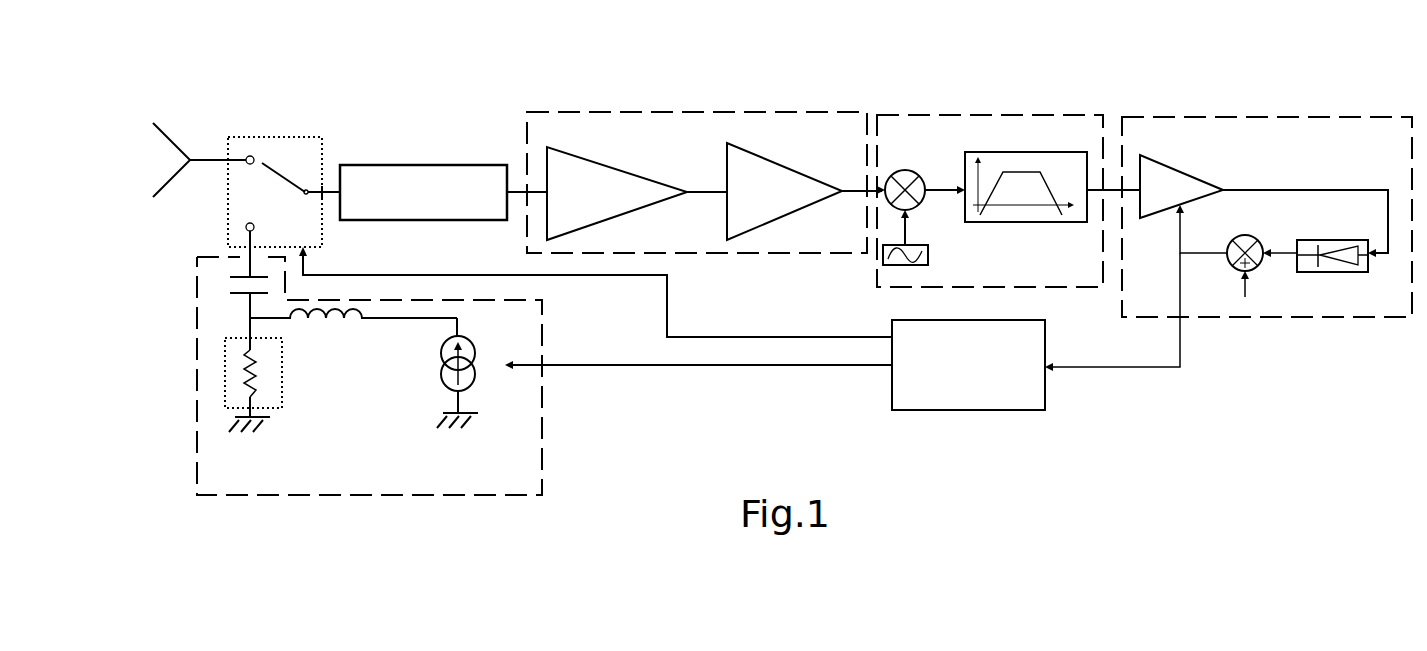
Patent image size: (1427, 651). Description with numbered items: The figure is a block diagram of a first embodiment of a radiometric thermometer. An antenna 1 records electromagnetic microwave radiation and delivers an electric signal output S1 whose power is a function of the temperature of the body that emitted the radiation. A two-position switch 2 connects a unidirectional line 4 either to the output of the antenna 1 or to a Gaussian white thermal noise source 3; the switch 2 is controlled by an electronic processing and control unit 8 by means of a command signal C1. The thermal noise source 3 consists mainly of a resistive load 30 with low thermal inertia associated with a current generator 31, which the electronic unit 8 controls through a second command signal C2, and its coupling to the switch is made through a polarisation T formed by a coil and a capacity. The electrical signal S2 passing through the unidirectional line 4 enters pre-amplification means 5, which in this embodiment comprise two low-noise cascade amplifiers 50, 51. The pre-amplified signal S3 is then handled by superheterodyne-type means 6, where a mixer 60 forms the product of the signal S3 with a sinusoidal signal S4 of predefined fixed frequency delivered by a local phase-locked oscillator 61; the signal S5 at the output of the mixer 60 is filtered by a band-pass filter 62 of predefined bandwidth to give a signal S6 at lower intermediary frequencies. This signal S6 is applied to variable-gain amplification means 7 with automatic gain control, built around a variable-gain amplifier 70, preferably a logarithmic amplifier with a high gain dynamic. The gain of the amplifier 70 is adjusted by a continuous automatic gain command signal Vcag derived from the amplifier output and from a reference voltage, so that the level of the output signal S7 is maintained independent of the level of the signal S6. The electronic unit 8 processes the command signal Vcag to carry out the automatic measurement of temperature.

The antenna 1 is at (190, 115).
The switch 2 is at (298, 152).
The Gaussian white thermal noise source 3 is at (472, 480).
The unidirectional line 4 is at (430, 182).
The pre-amplification means 5 is at (615, 120).
The superheterodyne-type means 6 is at (995, 123).
The variable-gain amplification means with automatic gain control 7 is at (1310, 130).
The electronic processing and control unit 8 is at (973, 377).
The resistive load 30 is at (275, 377).
The current generator 31 is at (425, 373).
The low-noise amplifier 50 is at (607, 203).
The low-noise amplifier 51 is at (770, 205).
The mixer 60 is at (905, 171).
The local phase-locked oscillator 61 is at (930, 253).
The band-pass filter 62 is at (1013, 215).
The variable-gain amplifier 70 is at (1155, 170).
The electric signal output S1 is at (203, 163).
The electrical signal S2 is at (520, 197).
The pre-amplified signal S3 is at (878, 190).
The sinusoidal signal S4 is at (907, 230).
The mixer output signal S5 is at (936, 194).
The intermediary frequency signal S6 is at (1112, 190).
The output signal S7 is at (1337, 187).
The command signal C1 is at (793, 340).
The command signal C2 is at (842, 368).
The continuous automatic gain command signal Vcag is at (1112, 312).